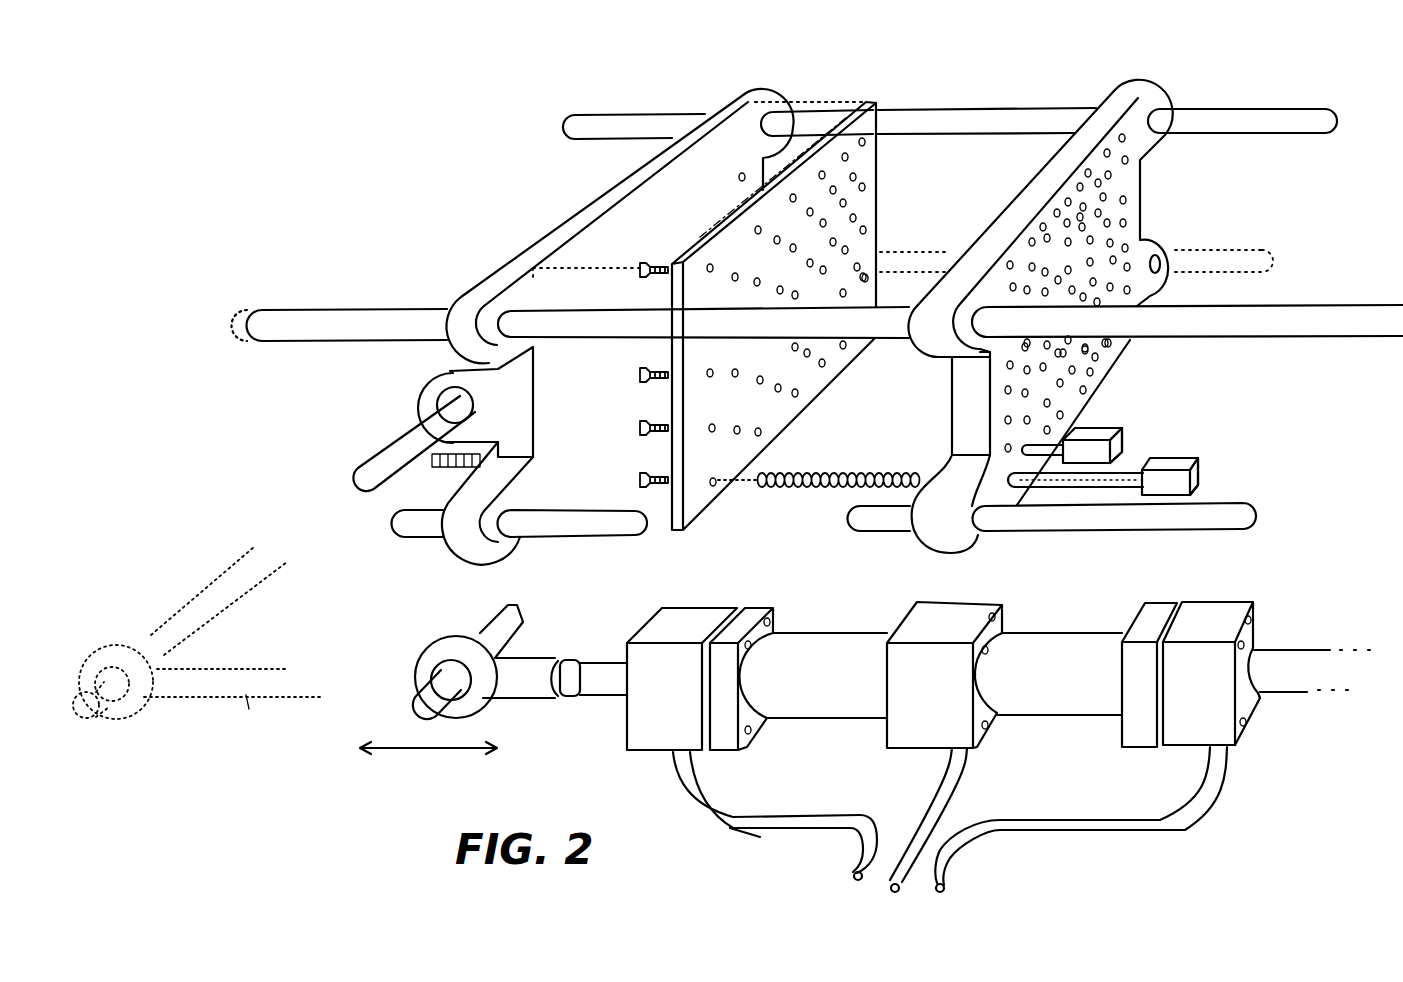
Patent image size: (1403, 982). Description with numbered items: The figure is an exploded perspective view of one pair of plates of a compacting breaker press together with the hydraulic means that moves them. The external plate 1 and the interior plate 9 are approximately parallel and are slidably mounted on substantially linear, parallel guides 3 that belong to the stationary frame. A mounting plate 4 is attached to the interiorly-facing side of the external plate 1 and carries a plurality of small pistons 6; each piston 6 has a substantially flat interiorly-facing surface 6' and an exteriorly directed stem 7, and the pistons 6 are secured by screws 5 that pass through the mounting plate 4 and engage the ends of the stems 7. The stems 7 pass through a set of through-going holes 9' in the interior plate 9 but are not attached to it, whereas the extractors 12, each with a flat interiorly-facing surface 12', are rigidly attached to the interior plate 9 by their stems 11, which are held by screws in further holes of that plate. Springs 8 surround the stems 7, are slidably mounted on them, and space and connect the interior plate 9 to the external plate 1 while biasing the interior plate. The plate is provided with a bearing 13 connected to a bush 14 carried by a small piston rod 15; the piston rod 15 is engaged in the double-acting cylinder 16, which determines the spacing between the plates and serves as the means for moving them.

The external plate 1 is at (740, 102).
The guide 3 is at (365, 332).
The mounting plate 4 is at (810, 148).
The screw 5 is at (640, 268).
The piston 6 is at (1185, 450).
The interiorly-facing surface 6' is at (1217, 476).
The stem 7 is at (1090, 477).
The spring 8 is at (790, 485).
The interior plate 9 is at (1090, 289).
The through-going hole 9' is at (1157, 200).
The stem 11 is at (1038, 440).
The extractor 12 is at (1123, 420).
The interiorly-facing surface 12' is at (1137, 445).
The bearing 13 is at (427, 395).
The bush 14 is at (430, 668).
The piston rod 15 is at (545, 668).
The double-acting cylinder 16 is at (842, 657).